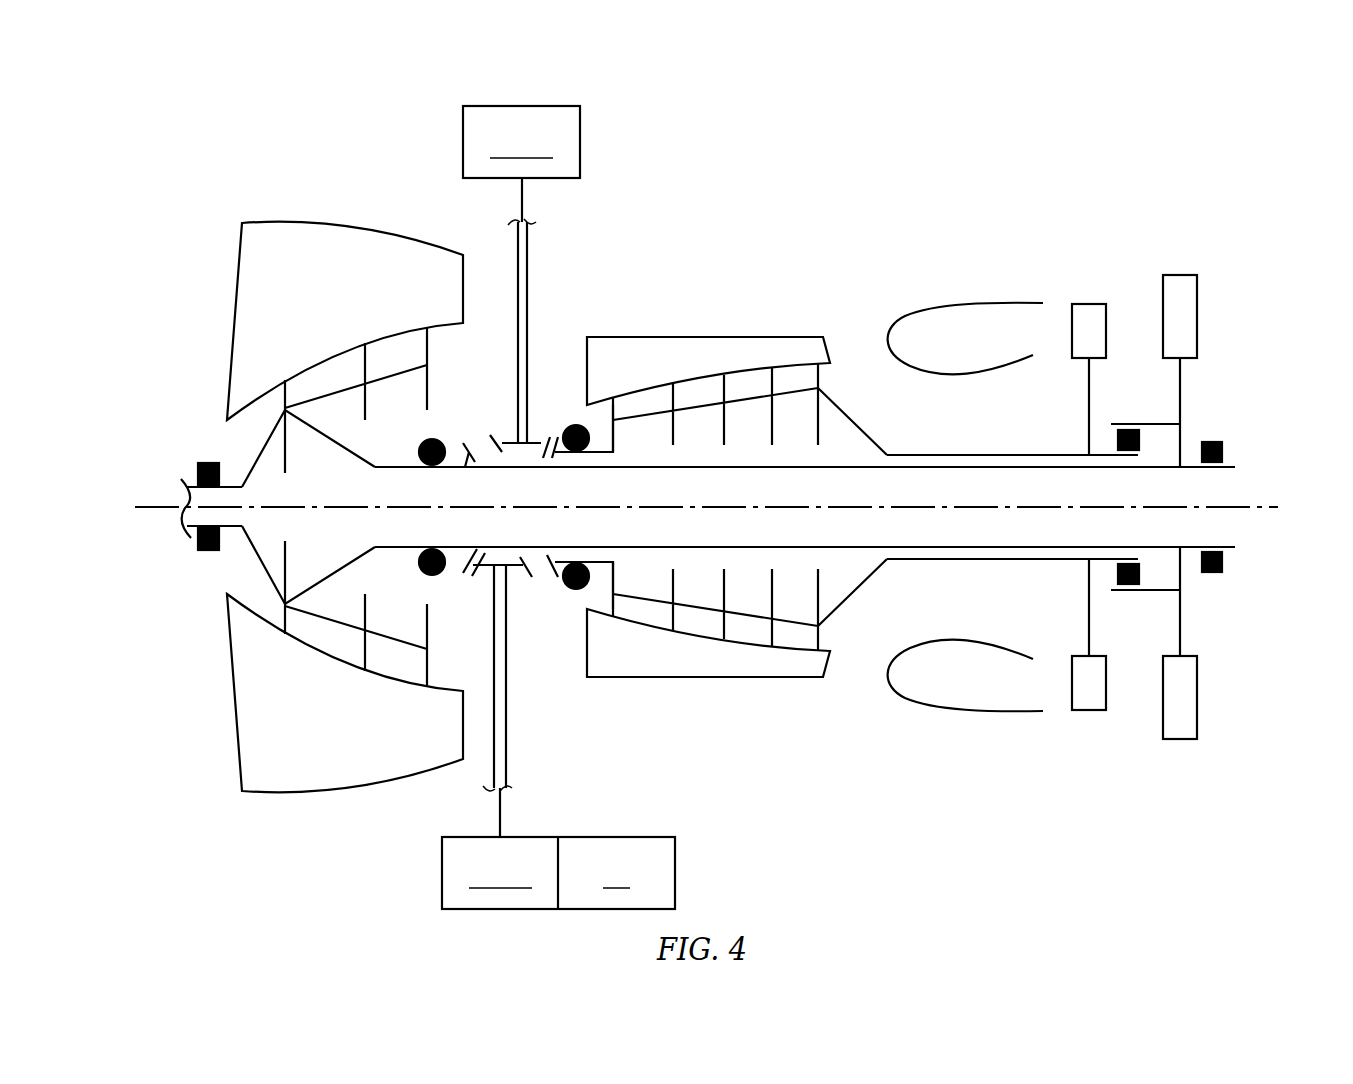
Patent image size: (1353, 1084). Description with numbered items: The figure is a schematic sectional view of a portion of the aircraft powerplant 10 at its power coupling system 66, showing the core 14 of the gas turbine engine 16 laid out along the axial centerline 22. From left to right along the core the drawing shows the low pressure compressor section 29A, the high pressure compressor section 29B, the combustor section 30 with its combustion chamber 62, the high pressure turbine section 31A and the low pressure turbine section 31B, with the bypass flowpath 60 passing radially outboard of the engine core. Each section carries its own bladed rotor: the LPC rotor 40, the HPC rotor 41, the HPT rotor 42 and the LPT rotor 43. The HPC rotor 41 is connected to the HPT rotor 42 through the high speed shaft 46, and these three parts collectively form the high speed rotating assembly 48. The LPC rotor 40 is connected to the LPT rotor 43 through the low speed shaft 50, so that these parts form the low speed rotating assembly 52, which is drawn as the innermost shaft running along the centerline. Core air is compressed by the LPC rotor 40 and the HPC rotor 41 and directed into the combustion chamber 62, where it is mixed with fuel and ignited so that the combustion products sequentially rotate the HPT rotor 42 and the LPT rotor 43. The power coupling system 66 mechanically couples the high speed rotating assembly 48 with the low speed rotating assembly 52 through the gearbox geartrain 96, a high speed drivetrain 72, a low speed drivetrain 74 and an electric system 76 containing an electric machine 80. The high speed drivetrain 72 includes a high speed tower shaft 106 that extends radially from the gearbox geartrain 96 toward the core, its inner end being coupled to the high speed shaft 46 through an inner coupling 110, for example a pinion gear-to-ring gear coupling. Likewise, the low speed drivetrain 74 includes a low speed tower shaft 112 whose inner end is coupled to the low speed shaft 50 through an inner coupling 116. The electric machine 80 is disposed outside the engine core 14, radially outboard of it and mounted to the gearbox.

The aircraft powerplant 10 is at (160, 82).
The gas turbine engine 16 is at (205, 118).
The core 14 is at (983, 175).
The axial centerline 22 is at (140, 510).
The low pressure compressor section 29A is at (349, 205).
The high pressure compressor section 29B is at (763, 308).
The combustor section 30 is at (965, 489).
The high pressure turbine section 31A is at (1088, 280).
The low pressure turbine section 31B is at (1180, 255).
The LPC rotor 40 is at (427, 348).
The HPC rotor 41 is at (836, 400).
The HPT rotor 42 is at (1089, 395).
The LPT rotor 43 is at (1180, 395).
The high speed shaft 46 is at (1003, 455).
The high speed rotating assembly 48 is at (883, 425).
The low speed shaft 50 is at (947, 467).
The low speed rotating assembly 52 is at (245, 437).
The bypass flowpath 60 is at (917, 312).
The combustion chamber 62 is at (967, 357).
The inter-rotating assembly power coupling system 66 is at (558, 507).
The gearbox geartrain 96 is at (558, 507).
The high speed drivetrain 72 is at (558, 507).
The low speed drivetrain 74 is at (538, 718).
The electric system 76 is at (770, 112).
The electric machine 80 is at (616, 875).
The high speed tower shaft 106 is at (527, 287).
The inner coupling 110 is at (505, 433).
The low speed tower shaft 112 is at (506, 703).
The inner coupling 116 is at (478, 582).